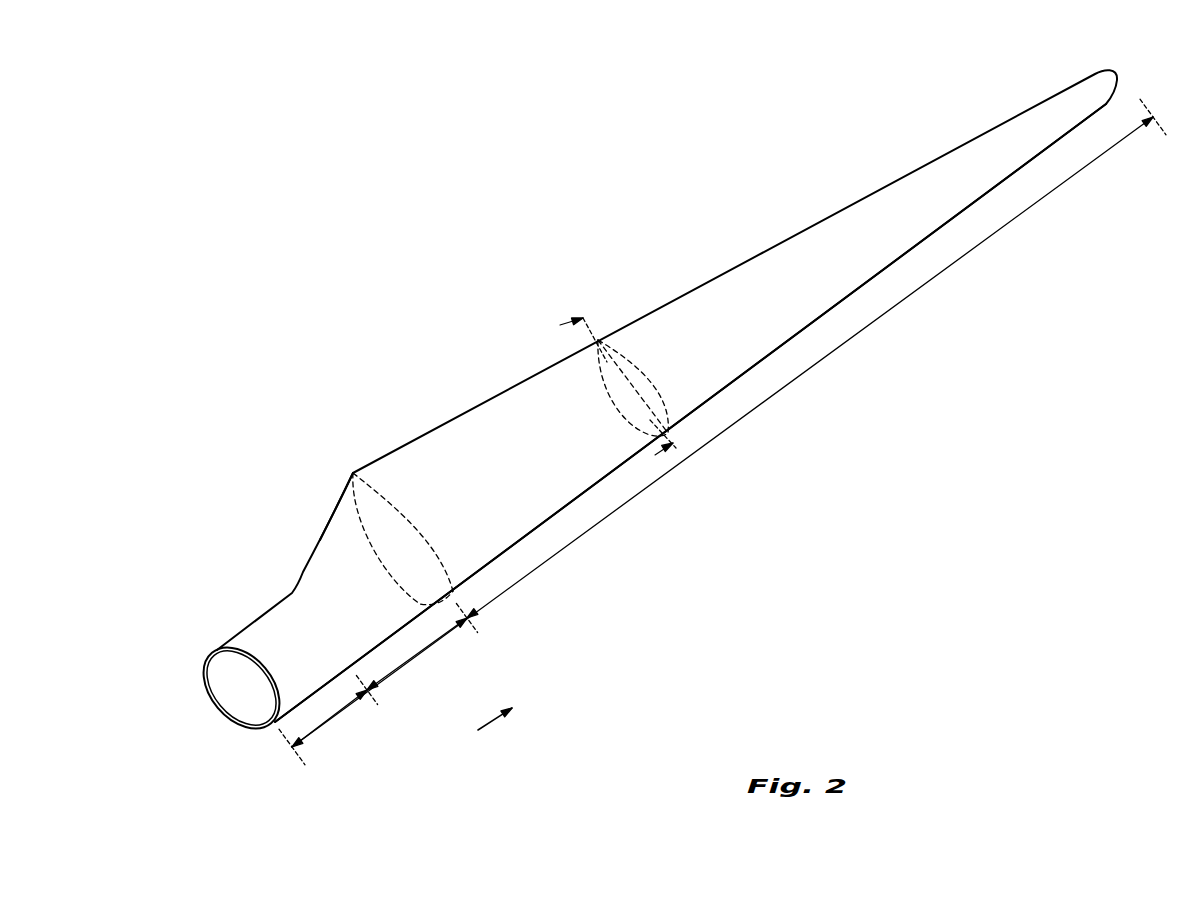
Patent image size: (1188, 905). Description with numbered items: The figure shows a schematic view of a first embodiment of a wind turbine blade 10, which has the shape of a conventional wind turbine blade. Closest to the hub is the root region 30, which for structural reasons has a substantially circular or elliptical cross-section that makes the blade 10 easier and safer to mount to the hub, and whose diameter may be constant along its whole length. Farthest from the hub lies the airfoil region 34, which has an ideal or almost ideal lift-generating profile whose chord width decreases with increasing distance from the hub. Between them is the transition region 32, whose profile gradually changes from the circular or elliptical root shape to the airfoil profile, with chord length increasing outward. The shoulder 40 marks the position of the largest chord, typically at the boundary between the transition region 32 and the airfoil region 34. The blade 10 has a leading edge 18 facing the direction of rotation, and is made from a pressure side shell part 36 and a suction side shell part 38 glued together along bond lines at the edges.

The wind turbine blade 10 is at (505, 280).
The leading edge 18 is at (842, 300).
The root region 30 is at (332, 717).
The transition region 32 is at (422, 652).
The airfoil region 34 is at (742, 417).
The pressure side shell part 36 is at (238, 648).
The suction side shell part 38 is at (210, 657).
The shoulder 40 is at (353, 473).